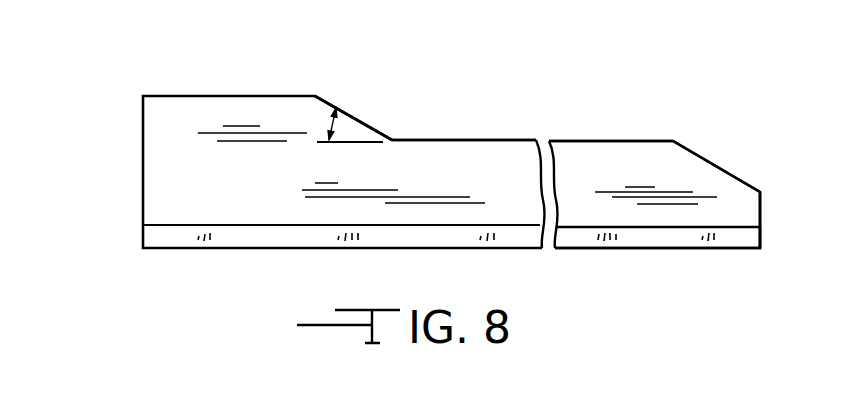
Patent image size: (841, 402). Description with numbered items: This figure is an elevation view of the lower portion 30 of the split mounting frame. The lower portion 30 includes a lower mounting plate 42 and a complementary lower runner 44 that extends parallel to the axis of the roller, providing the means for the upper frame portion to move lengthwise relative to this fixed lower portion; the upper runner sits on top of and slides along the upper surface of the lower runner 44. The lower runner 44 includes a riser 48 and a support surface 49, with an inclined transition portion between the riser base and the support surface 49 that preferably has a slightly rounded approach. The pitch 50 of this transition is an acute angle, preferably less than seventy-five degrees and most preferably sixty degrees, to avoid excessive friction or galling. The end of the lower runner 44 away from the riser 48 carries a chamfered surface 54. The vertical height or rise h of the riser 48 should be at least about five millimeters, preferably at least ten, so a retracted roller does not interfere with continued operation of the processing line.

The lower portion 30 is at (500, 97).
The riser 48 is at (378, 104).
The pitch of the transition portion 50 is at (360, 123).
The vertical height or rise h is at (330, 128).
The support surface 49 is at (598, 140).
The chamfered surface 54 is at (720, 165).
The lower runner 44 is at (776, 205).
The lower mounting plate 42 is at (760, 237).